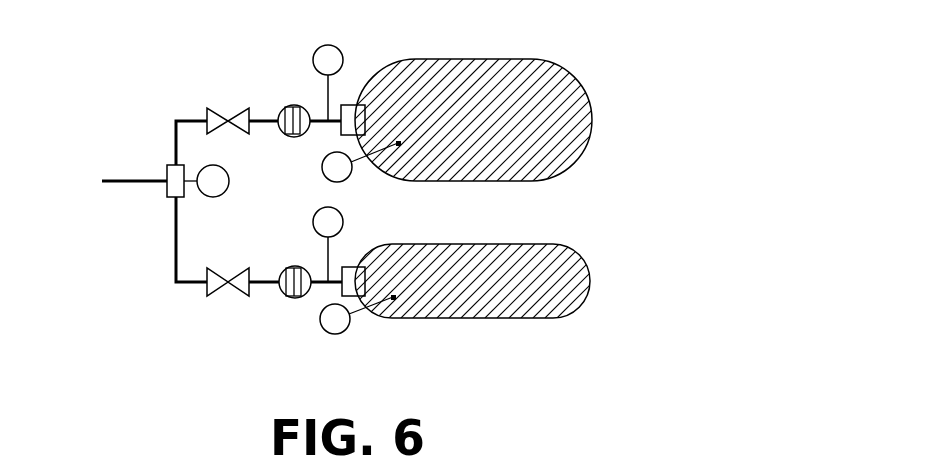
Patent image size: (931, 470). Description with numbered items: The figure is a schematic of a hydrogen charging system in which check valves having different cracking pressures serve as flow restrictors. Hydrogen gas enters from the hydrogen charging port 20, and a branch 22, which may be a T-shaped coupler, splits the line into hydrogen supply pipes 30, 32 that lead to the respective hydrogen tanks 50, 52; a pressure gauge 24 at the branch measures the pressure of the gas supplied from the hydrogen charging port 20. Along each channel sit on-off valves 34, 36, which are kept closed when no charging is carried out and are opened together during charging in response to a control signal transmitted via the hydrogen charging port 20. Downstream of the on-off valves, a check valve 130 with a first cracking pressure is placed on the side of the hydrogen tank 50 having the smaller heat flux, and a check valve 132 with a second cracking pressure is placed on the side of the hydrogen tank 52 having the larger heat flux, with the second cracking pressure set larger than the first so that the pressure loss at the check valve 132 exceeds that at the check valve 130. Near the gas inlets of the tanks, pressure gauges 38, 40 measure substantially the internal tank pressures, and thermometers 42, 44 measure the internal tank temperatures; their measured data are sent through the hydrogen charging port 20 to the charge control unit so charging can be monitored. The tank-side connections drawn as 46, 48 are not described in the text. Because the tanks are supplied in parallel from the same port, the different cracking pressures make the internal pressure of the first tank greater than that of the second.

The hydrogen charging port 20 is at (109, 181).
The branch 22 is at (166, 198).
The pressure gauge 24 is at (214, 198).
The hydrogen supply pipe 30 is at (178, 118).
The hydrogen supply pipe 32 is at (190, 284).
The on-off valve 34 is at (230, 106).
The on-off valve 36 is at (218, 297).
The pressure gauge 38 is at (319, 49).
The pressure gauge 40 is at (313, 222).
The thermometer 42 is at (322, 170).
The thermometer 44 is at (336, 334).
The first receptacle 46 is at (348, 104).
The second receptacle 48 is at (350, 266).
The hydrogen tank 50 is at (532, 63).
The hydrogen tank 52 is at (535, 251).
The check valve 130 is at (284, 105).
The check valve 132 is at (292, 299).